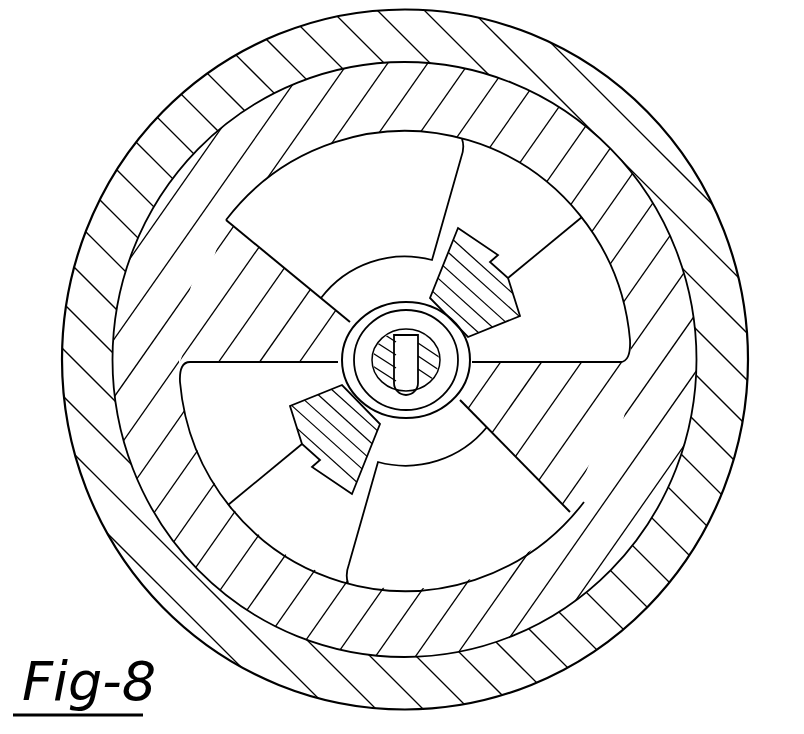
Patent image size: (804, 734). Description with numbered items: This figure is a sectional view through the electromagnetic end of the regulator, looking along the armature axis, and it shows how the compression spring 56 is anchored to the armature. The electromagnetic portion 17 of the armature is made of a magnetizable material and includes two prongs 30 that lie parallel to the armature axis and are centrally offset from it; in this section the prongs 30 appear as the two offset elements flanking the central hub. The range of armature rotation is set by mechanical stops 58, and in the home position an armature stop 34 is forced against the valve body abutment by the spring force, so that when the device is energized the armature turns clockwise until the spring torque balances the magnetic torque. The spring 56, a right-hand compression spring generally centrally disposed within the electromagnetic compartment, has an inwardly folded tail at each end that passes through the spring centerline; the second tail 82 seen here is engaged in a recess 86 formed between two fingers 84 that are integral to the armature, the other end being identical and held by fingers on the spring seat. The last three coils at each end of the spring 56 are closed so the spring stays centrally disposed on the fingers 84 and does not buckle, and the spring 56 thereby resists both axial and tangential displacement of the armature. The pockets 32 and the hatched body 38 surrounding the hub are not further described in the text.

The electromagnetic portion 17 is at (598, 279).
The prongs 30 is at (445, 227).
The pocket 32 is at (254, 243).
The armature stop 34 is at (498, 262).
The rotor body 38 is at (212, 300).
The compression spring 56 is at (255, 495).
The mechanical stops 58 is at (553, 231).
The second tail 82 is at (417, 393).
The fingers 84 is at (418, 363).
The recess 86 is at (382, 358).